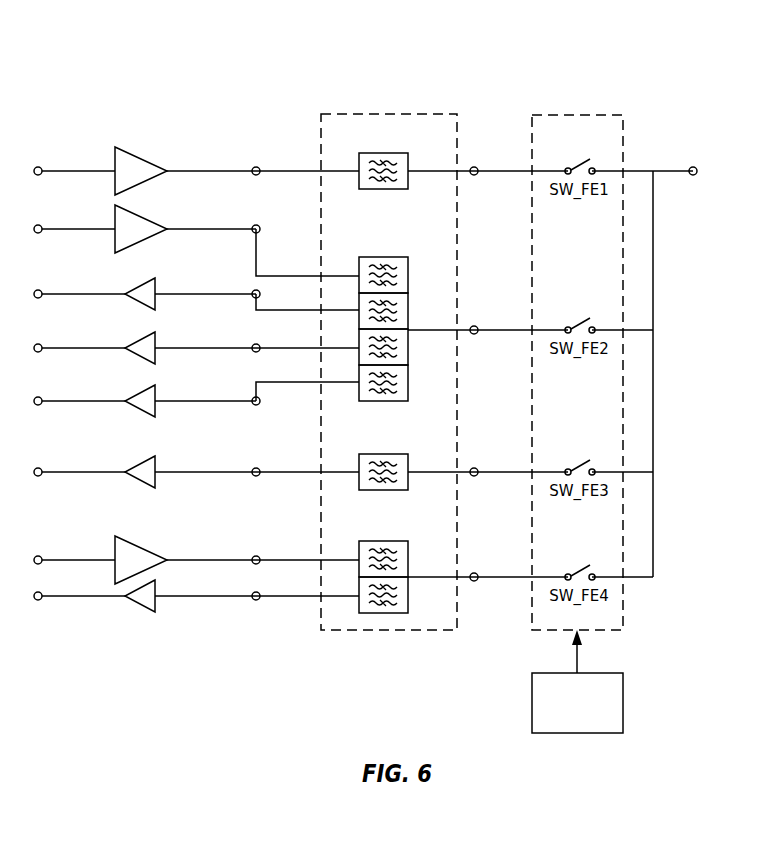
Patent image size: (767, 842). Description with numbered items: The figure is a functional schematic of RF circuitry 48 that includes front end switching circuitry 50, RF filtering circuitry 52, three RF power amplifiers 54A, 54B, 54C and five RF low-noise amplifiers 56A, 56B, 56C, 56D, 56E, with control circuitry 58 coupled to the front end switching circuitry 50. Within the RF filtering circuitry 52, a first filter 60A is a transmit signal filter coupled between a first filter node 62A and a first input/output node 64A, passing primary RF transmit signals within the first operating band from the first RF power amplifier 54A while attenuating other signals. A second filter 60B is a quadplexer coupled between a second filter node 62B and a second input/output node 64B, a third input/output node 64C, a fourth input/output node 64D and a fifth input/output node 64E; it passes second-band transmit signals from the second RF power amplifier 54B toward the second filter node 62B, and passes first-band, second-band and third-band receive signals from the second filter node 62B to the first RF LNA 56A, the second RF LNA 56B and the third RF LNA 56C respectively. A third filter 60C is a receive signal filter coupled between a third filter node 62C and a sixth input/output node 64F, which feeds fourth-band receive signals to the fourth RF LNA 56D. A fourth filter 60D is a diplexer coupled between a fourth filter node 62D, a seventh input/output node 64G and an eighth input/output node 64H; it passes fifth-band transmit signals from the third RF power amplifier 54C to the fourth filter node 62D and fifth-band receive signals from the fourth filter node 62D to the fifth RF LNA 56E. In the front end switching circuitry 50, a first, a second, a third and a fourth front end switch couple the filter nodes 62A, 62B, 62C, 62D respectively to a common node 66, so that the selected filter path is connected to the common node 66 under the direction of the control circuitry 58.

The RF circuitry 48 is at (518, 52).
The front end switching circuitry 50 is at (582, 115).
The RF filtering circuitry 52 is at (397, 114).
The first RF power amplifier 54A is at (141, 171).
The second RF power amplifier 54B is at (141, 229).
The third RF power amplifier 54C is at (141, 560).
The first RF LNA 56A is at (143, 285).
The second RF LNA 56B is at (143, 339).
The third RF LNA 56C is at (143, 392).
The fourth RF LNA 56D is at (143, 463).
The fifth RF LNA 56E is at (143, 603).
The control circuitry 58 is at (577, 681).
The first filter 60A is at (382, 153).
The second filter 60B is at (382, 257).
The third filter 60C is at (382, 454).
The fourth filter 60D is at (382, 541).
The first filter node 62A is at (477, 167).
The second filter node 62B is at (477, 326).
The third filter node 62C is at (477, 468).
The fourth filter node 62D is at (477, 573).
The first input/output node 64A is at (259, 168).
The second input/output node 64B is at (259, 226).
The third input/output node 64C is at (259, 291).
The fourth input/output node 64D is at (259, 345).
The fifth input/output node 64E is at (259, 404).
The sixth input/output node 64F is at (259, 469).
The seventh input/output node 64G is at (259, 557).
The eighth input/output node 64H is at (259, 593).
The common node 66 is at (697, 167).